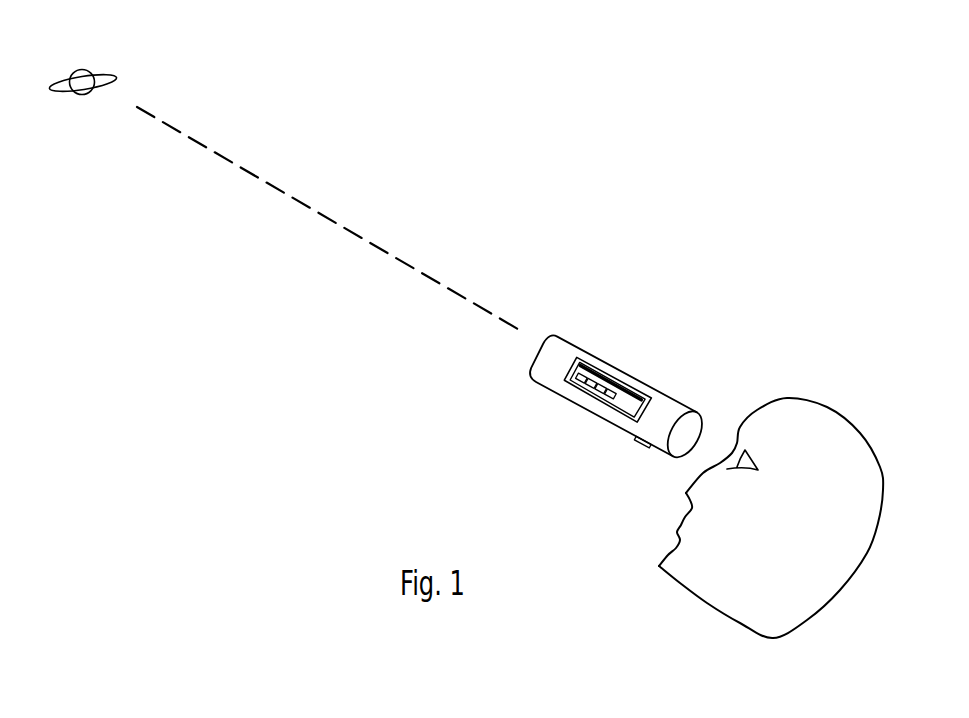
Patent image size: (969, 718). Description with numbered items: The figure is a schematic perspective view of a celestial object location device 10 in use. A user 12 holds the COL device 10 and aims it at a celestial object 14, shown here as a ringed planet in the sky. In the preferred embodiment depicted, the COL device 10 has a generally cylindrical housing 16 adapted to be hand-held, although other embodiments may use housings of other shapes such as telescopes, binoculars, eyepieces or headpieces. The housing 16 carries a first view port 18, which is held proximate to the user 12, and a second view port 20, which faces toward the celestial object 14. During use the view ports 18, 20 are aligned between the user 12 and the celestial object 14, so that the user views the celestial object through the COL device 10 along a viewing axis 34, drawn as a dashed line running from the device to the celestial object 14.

The celestial object location device 10 is at (617, 367).
The user 12 is at (787, 398).
The celestial object 14 is at (93, 70).
The housing 16 is at (587, 403).
The first view port 18 is at (685, 434).
The second view port 20 is at (607, 389).
The viewing axis 34 is at (438, 282).